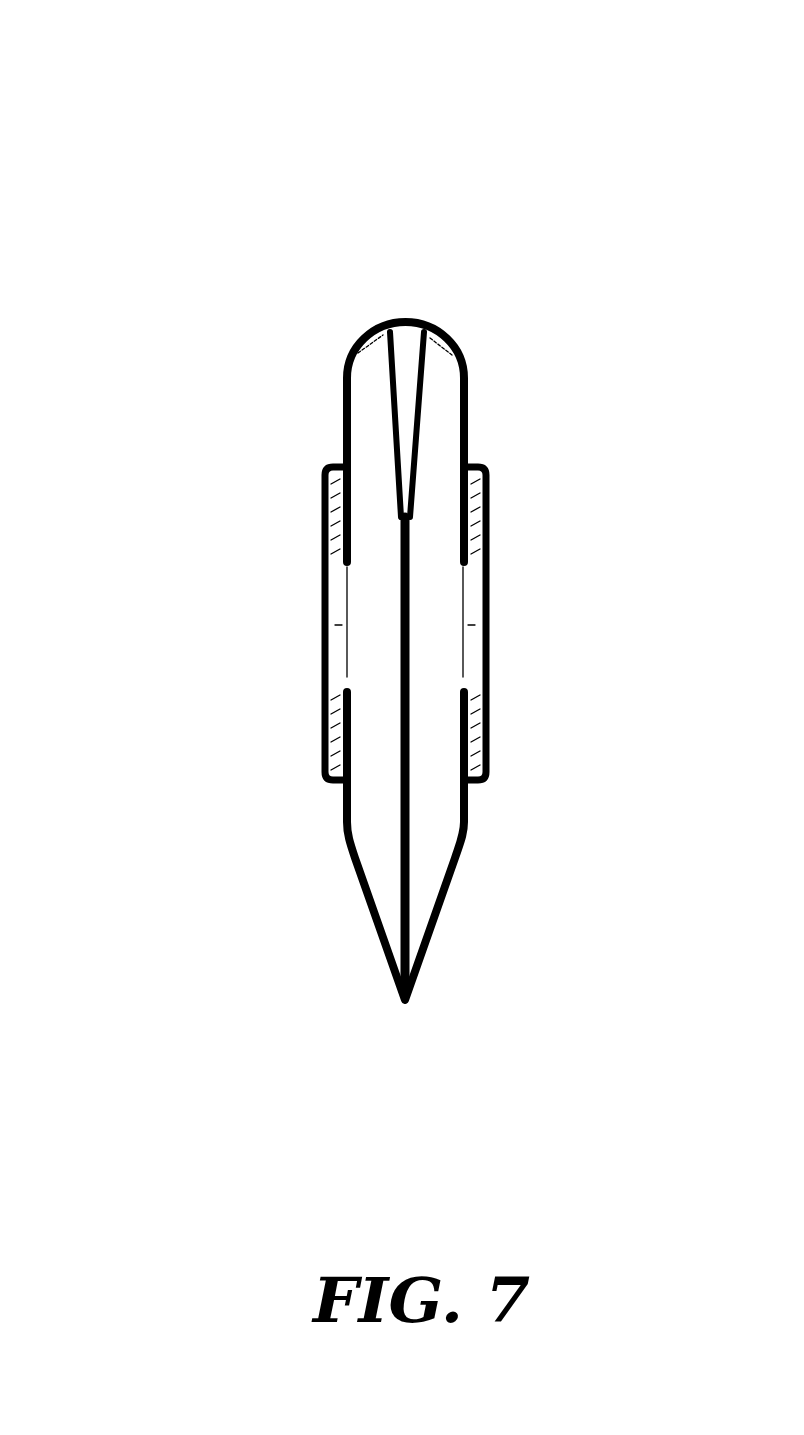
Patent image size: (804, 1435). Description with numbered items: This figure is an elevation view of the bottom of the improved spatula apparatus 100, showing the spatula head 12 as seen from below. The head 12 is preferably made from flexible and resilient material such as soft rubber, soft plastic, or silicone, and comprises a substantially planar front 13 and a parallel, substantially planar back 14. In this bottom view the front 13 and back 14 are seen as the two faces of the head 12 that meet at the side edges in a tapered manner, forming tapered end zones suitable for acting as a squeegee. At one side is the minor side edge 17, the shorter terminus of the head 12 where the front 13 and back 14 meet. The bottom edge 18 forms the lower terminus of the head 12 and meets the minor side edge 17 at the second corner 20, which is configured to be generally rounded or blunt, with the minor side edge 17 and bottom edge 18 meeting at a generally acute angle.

The spatula apparatus 100 is at (116, 97).
The spatula head 12 is at (534, 400).
The front 13 is at (322, 640).
The back 14 is at (490, 603).
The minor side edge 17 is at (395, 318).
The bottom edge 18 is at (398, 778).
The second corner 20 is at (410, 320).